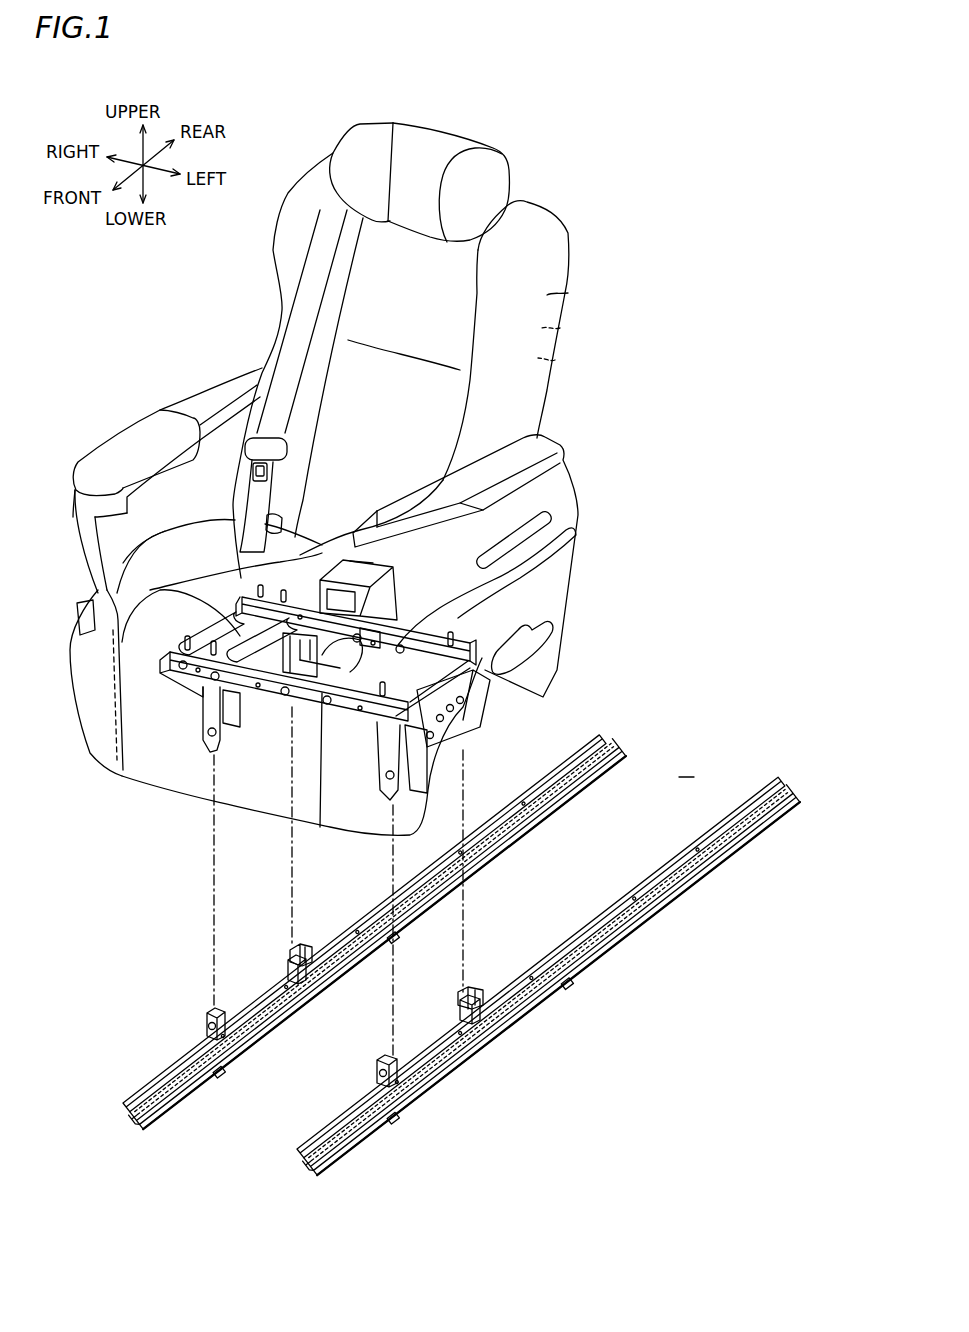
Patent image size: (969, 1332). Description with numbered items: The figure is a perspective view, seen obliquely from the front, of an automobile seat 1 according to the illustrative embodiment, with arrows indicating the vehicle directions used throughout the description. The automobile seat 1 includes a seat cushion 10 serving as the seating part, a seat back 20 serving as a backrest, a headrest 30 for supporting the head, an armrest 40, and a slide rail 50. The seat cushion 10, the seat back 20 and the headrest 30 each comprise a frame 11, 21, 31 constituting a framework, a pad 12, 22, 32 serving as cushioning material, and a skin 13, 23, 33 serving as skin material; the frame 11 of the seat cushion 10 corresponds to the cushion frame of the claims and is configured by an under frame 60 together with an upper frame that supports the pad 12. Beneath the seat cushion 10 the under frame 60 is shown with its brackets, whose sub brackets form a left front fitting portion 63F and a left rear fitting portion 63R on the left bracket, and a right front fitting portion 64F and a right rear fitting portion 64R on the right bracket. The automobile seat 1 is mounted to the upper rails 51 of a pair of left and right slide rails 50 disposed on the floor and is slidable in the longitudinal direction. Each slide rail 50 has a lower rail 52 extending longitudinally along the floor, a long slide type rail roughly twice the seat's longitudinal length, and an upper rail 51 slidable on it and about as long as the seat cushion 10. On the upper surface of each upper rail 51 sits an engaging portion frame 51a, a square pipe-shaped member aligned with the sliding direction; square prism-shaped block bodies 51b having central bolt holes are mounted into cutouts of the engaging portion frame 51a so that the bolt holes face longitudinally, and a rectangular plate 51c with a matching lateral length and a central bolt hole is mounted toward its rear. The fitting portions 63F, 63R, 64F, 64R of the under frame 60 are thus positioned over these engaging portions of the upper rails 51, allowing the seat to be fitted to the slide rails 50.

The automobile seat 1 is at (600, 148).
The seat cushion 10 is at (152, 527).
The frame 11 is at (315, 703).
The pad 12 is at (130, 590).
The skin 13 is at (140, 570).
The seat back 20 is at (578, 244).
The frame 21 is at (555, 360).
The pad 22 is at (560, 328).
The skin 23 is at (568, 293).
The headrest 30 is at (422, 114).
The frame 31 is at (477, 177).
The pad 32 is at (453, 148).
The skin 33 is at (433, 142).
The armrest 40 is at (213, 385).
The slide rail 50 is at (691, 716).
The upper rail 51 is at (512, 981).
The engaging portion frame 51a is at (248, 1005).
The block body 51b is at (207, 1024).
The rectangular plate 51c is at (300, 945).
The lower rail 52 is at (310, 1132).
The under frame 60 is at (164, 697).
The left front fitting portion 63F is at (364, 773).
The left rear fitting portion 63R is at (506, 690).
The right front fitting portion 64F is at (180, 727).
The right rear fitting portion 64R is at (373, 630).